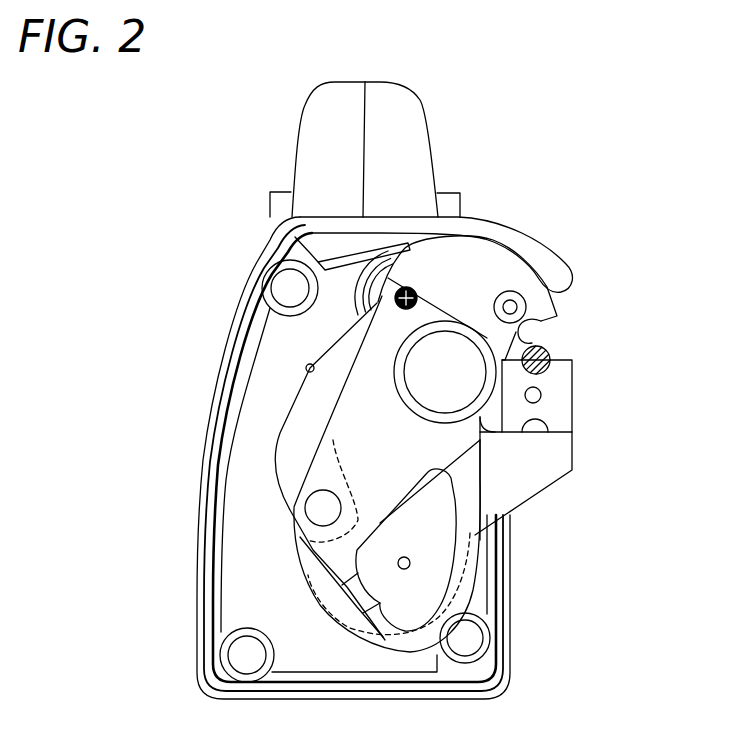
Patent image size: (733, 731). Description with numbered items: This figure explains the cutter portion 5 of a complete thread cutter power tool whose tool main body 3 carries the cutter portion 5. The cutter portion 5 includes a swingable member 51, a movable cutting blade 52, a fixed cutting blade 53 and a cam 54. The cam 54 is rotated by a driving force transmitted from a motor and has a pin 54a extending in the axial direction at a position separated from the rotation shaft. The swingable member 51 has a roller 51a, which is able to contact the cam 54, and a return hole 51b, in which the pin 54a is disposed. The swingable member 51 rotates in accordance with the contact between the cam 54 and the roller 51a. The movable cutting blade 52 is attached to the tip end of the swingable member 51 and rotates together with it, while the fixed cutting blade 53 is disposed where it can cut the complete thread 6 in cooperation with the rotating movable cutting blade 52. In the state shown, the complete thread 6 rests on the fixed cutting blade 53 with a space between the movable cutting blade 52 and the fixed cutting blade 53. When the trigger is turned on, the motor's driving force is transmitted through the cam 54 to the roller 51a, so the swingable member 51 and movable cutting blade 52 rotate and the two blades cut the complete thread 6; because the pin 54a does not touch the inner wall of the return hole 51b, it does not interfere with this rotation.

The tool main body 3 is at (430, 105).
The cutter portion 5 is at (591, 241).
The swingable member 51 is at (485, 255).
The roller 51a is at (297, 512).
The return hole 51b is at (445, 538).
The movable cutting blade 52 is at (540, 331).
The fixed cutting blade 53 is at (557, 378).
The cam 54 is at (322, 605).
The pin 54a is at (411, 562).
The complete thread 6 is at (556, 348).